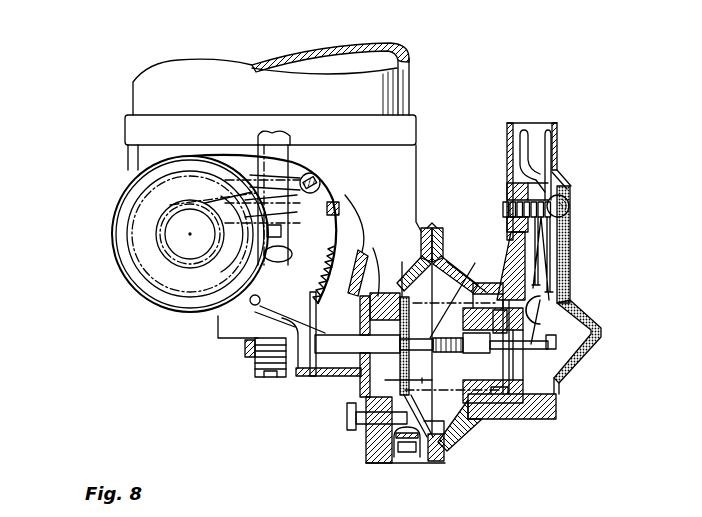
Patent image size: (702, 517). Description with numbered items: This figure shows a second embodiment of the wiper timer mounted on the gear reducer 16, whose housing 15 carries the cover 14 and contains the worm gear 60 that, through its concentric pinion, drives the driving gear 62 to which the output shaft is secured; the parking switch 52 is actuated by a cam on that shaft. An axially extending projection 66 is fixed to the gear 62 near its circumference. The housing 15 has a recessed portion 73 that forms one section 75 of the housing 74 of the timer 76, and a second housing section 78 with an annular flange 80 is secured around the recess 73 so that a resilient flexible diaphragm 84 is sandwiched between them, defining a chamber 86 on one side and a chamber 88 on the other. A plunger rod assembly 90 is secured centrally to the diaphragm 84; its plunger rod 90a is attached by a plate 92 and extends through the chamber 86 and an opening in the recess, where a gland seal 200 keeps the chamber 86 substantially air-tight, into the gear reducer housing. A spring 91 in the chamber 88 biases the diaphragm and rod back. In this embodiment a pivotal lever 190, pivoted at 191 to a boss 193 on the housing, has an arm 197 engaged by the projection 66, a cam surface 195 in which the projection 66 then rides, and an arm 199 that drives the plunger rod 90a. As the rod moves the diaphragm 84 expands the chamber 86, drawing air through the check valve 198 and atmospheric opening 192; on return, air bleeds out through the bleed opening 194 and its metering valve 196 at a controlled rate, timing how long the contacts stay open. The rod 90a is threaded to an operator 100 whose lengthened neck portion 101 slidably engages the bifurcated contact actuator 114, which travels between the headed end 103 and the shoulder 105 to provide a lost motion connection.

The cover 14 is at (300, 98).
The housing 15 is at (110, 238).
The gear reducer 16 is at (111, 198).
The parking switch 52 is at (336, 188).
The worm gear 60 is at (166, 208).
The driving gear 62 is at (235, 262).
The projection 66 is at (250, 303).
The recessed portion 73 is at (442, 442).
The housing 74 is at (447, 260).
The section 75 is at (397, 387).
The timer 76 is at (427, 227).
The second housing section 78 is at (457, 270).
The annular flange 80 is at (434, 226).
The flexible diaphragm 84 is at (422, 283).
The chamber 86 is at (405, 277).
The chamber 88 is at (459, 378).
The plunger rod assembly 90 is at (457, 425).
The plunger rod 90a is at (431, 343).
The spring 91 is at (475, 290).
The plate 92 is at (374, 262).
The operator 100 is at (600, 293).
The neck portion 101 is at (560, 383).
The headed end 103 is at (557, 338).
The shoulder 105 is at (556, 405).
The contact actuator 114 is at (568, 298).
The pivotal lever 190 is at (390, 172).
The pivot 191 is at (323, 175).
The atmospheric opening 192 is at (429, 462).
The boss 193 is at (317, 173).
The bleed opening 194 is at (392, 396).
The cam surface 195 is at (345, 170).
The metering valve 196 is at (344, 421).
The arm 197 is at (298, 300).
The check valve 198 is at (389, 459).
The arm 199 is at (340, 214).
The gland seal 200 is at (360, 250).